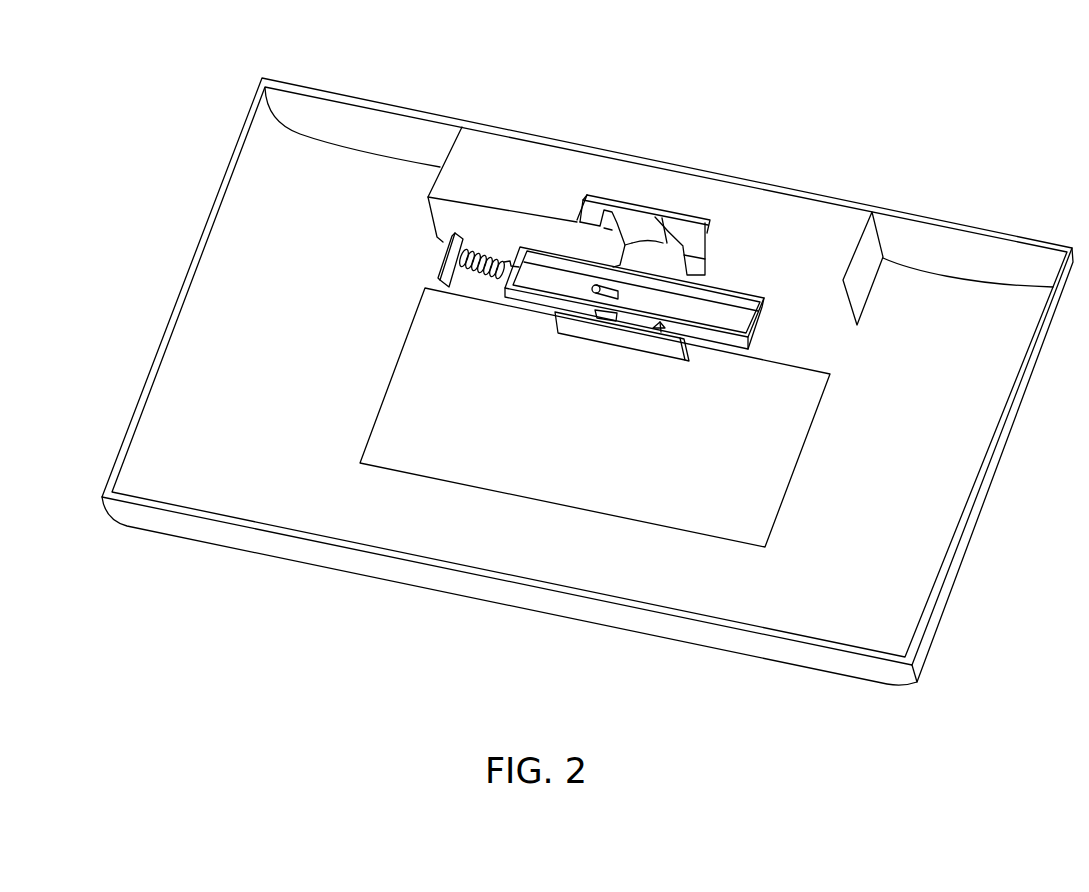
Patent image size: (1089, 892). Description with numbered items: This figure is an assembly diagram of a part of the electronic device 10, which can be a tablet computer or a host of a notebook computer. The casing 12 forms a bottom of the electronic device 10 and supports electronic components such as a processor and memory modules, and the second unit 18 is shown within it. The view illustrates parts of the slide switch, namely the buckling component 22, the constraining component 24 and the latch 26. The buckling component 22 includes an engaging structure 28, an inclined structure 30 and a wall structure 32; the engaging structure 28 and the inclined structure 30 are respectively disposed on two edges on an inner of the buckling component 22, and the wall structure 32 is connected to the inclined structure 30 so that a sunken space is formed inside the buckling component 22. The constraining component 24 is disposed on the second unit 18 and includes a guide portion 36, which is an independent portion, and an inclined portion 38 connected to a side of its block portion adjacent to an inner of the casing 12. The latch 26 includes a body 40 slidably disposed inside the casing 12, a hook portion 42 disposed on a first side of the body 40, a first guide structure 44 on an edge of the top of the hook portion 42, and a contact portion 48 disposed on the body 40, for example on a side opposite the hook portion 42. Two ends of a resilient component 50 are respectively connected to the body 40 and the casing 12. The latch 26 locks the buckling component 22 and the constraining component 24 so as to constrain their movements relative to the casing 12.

The electronic device 10 is at (952, 118).
The casing 12 is at (262, 473).
The second unit 18 is at (438, 437).
The buckling component 22 is at (585, 115).
The constraining component 24 is at (572, 387).
The latch 26 is at (915, 270).
The engaging structure 28 is at (617, 206).
The inclined structure 30 is at (683, 245).
The wall structure 32 is at (697, 222).
The guide portion 36 is at (660, 327).
The inclined portion 38 is at (602, 323).
The body 40 is at (750, 318).
The hook portion 42 is at (720, 272).
The first guide structure 44 is at (700, 253).
The contact portion 48 is at (627, 310).
The resilient component 50 is at (488, 246).